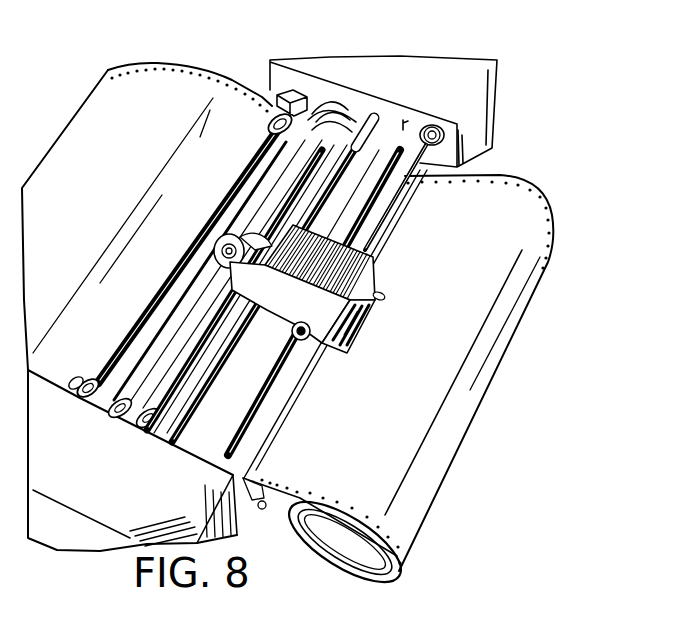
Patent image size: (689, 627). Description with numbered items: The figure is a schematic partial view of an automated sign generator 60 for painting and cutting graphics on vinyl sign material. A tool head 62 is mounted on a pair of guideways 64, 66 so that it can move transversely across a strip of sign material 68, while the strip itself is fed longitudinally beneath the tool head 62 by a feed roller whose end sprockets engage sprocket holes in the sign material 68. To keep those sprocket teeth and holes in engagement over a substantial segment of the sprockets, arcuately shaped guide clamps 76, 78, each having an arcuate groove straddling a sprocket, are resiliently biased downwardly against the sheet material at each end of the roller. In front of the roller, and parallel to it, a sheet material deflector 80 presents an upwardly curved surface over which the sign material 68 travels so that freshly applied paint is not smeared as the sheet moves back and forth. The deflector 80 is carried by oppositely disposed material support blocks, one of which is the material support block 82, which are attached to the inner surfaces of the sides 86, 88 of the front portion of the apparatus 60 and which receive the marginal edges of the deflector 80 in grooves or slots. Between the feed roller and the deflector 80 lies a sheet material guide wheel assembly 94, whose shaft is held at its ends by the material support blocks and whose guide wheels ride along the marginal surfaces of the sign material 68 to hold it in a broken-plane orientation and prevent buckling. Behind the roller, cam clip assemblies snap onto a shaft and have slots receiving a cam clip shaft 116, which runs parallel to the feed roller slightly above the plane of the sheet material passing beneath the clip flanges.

The automated sign generator 60 is at (398, 56).
The tool head 62 is at (376, 279).
The guideway 64 is at (430, 123).
The guideway 66 is at (173, 447).
The strip of sign material 68 is at (100, 110).
The guide clamp 76 is at (348, 128).
The guide clamp 78 is at (137, 423).
The sheet material deflector 80 is at (266, 106).
The material support block 82 is at (286, 92).
The side 86 is at (327, 92).
The side 88 is at (97, 403).
The sheet material guide wheel assembly 94 is at (137, 318).
The cam clip shaft 116 is at (470, 168).